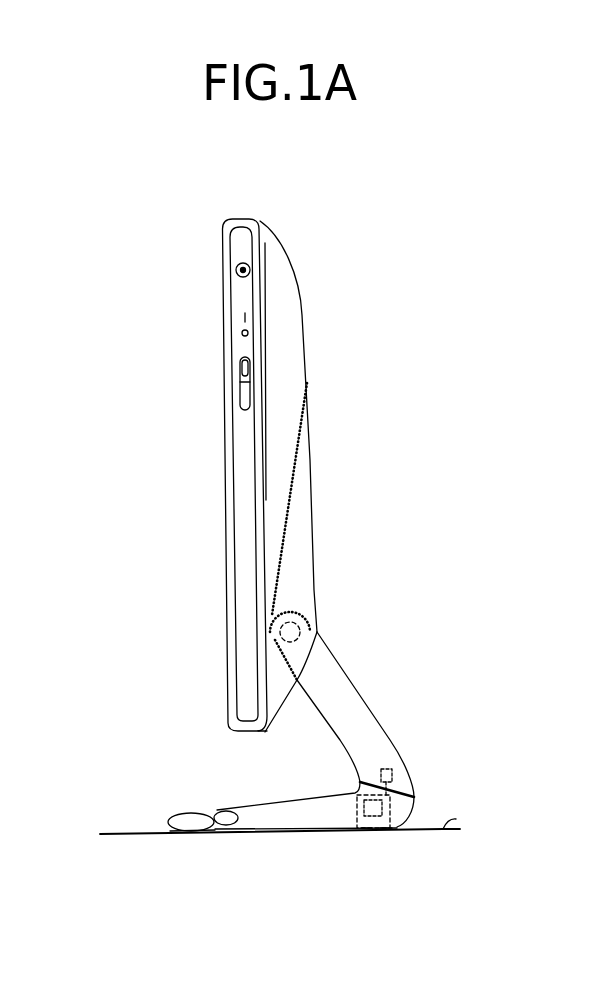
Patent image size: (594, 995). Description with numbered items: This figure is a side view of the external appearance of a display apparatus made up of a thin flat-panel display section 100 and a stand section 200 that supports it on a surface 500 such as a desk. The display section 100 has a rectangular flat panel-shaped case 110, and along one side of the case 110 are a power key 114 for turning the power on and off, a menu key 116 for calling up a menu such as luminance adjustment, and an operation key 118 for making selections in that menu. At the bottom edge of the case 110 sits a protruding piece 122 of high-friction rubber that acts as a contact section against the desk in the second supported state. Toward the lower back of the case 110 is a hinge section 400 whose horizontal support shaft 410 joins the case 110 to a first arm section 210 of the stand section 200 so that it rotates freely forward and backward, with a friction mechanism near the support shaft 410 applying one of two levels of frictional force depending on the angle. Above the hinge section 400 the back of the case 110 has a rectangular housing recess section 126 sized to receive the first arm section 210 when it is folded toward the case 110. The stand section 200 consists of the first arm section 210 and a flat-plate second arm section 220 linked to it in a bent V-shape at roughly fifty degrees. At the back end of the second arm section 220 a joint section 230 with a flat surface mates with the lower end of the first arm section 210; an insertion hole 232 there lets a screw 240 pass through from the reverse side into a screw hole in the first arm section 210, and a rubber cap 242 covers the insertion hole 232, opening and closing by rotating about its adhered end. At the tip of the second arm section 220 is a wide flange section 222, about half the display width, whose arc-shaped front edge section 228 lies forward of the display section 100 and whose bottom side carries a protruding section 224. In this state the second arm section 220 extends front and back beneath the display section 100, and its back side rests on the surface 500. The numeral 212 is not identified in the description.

The display section 100 is at (304, 302).
The case 110 is at (264, 258).
The power key 114 is at (237, 266).
The menu key 116 is at (242, 331).
The operation key 118 is at (240, 393).
The protruding piece 122 is at (268, 733).
The housing recess section 126 is at (307, 453).
The stand section 200 is at (386, 722).
The first arm section 210 is at (340, 690).
The engaging portion 212 is at (395, 776).
The second arm section 220 is at (273, 815).
The flange section 222 is at (187, 819).
The protruding section 224 is at (192, 836).
The front edge section 228 is at (168, 826).
The joint section 230 is at (392, 811).
The insertion hole 232 is at (400, 830).
The screw 240 is at (367, 830).
The cap 242 is at (360, 830).
The hinge section 400 is at (288, 608).
The support shaft 410 is at (292, 634).
The surface 500 is at (456, 819).